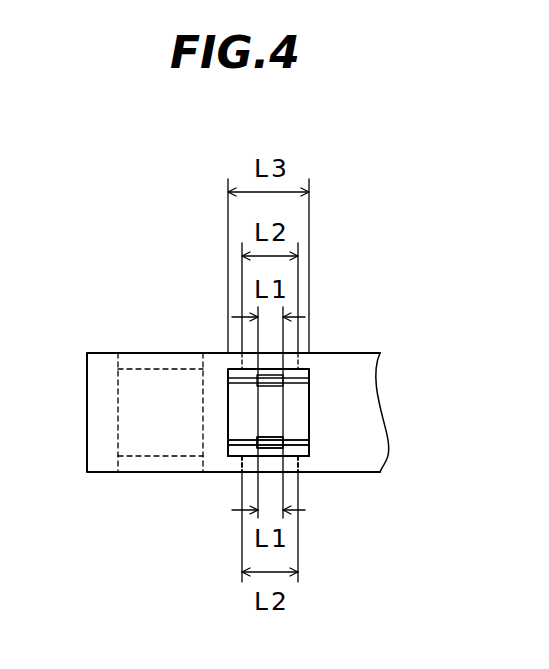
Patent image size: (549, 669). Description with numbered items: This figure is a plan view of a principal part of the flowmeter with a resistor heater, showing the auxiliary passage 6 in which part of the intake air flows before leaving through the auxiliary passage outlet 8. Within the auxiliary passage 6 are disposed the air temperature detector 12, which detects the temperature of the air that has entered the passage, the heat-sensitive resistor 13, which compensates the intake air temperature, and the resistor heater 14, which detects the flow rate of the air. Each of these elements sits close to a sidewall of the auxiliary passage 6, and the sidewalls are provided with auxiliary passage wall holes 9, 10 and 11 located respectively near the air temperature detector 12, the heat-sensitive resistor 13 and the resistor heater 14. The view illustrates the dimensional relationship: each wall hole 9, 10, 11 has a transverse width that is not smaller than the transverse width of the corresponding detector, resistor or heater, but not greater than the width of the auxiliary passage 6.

The auxiliary passage 6 is at (252, 413).
The auxiliary passage outlet 8 is at (151, 352).
The auxiliary passage wall hole 9 is at (297, 465).
The auxiliary passage wall hole 10 is at (268, 464).
The auxiliary passage wall hole 11 is at (297, 363).
The air temperature detector 12 is at (283, 428).
The heat-sensitive resistor 13 is at (268, 442).
The resistor heater 14 is at (282, 389).